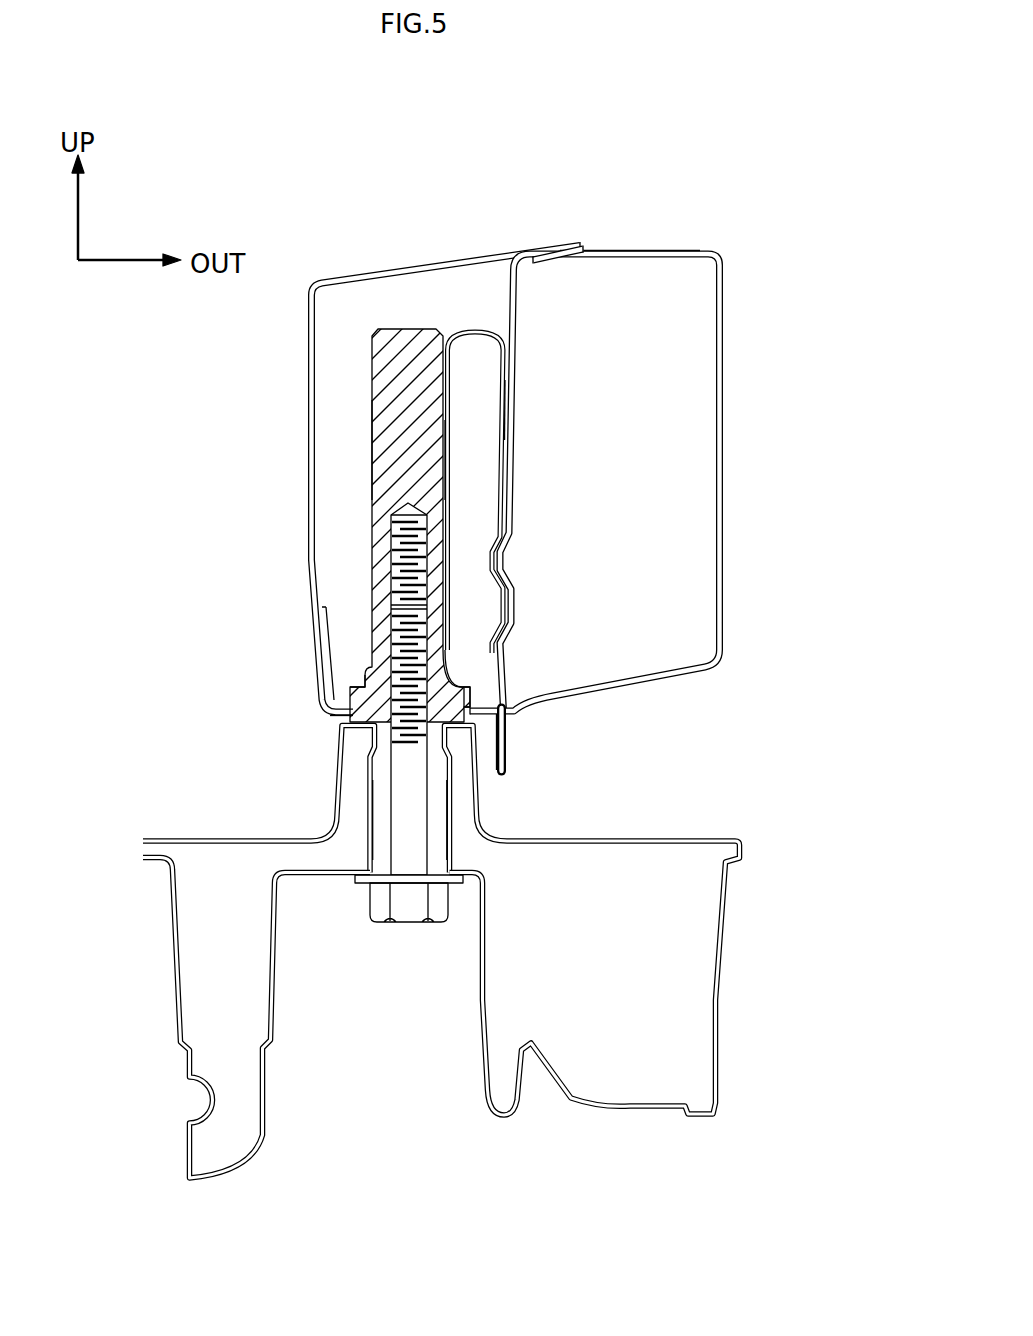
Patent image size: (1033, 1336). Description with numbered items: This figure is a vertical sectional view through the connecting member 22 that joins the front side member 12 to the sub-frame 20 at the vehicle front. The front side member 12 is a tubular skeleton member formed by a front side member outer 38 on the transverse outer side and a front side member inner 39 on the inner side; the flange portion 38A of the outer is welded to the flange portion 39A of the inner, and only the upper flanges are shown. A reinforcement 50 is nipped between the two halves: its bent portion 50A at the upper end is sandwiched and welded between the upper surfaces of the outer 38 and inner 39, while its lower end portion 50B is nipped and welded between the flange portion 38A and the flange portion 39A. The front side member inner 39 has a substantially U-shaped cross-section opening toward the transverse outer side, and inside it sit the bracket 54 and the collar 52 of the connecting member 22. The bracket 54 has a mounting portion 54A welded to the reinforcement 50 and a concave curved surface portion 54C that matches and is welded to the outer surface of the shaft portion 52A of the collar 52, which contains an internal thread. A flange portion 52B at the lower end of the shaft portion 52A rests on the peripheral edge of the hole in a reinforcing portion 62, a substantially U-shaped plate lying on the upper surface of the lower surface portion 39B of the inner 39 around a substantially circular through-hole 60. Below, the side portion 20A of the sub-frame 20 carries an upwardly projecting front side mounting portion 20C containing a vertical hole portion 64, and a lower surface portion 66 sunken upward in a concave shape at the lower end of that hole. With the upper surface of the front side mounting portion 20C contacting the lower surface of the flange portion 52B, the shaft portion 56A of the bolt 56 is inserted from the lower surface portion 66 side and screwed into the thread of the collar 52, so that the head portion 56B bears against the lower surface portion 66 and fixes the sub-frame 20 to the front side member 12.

The front side member 12 is at (652, 229).
The sub-frame 20 is at (685, 826).
The side portion 20A is at (728, 975).
The front side mounting portion 20C is at (340, 775).
The connecting member 22 is at (330, 526).
The front side member outer 38 is at (607, 240).
The flange portion 38A is at (508, 757).
The front side member inner 39 is at (427, 246).
The flange portion 39A is at (487, 765).
The lower surface portion 39B is at (335, 717).
The reinforcement 50 is at (525, 312).
The bent portion 50A is at (548, 266).
The lower end portion 50B is at (512, 728).
The collar 52 is at (362, 409).
The shaft portion 52A is at (375, 450).
The flange portion 52B is at (357, 688).
The bracket 54 is at (478, 318).
The mounting portion 54A is at (500, 410).
The curved surface portion 54C is at (450, 467).
The bolt 56 is at (405, 940).
The shaft portion 56A is at (430, 845).
The head portion 56B is at (428, 925).
The through-hole 60 is at (463, 705).
The reinforcing portion 62 is at (327, 643).
The hole portion 64 is at (380, 803).
The lower surface portion 66 is at (327, 873).